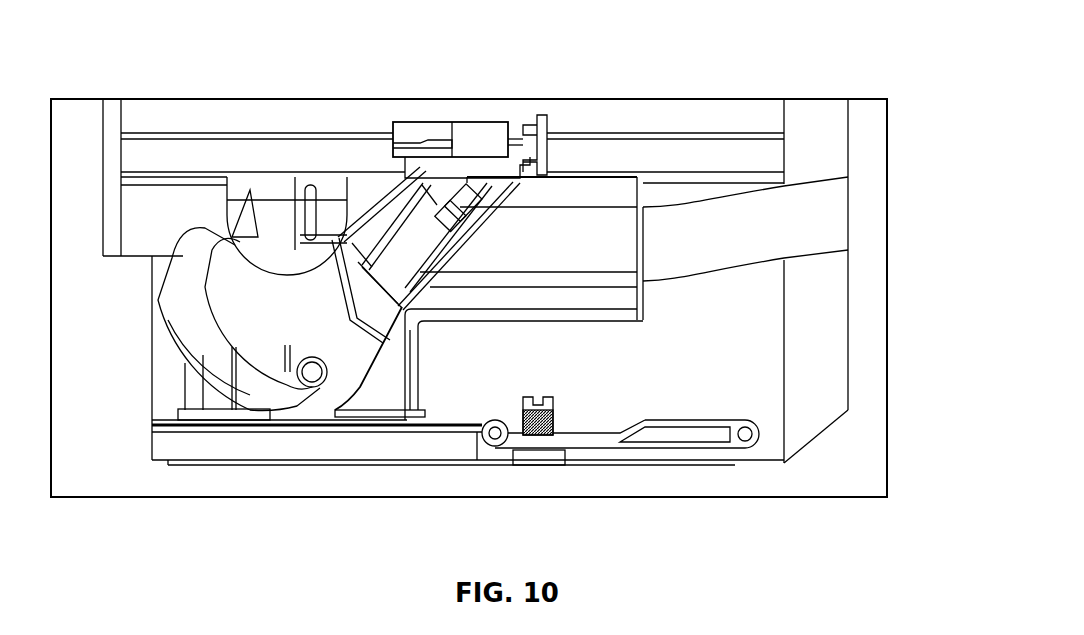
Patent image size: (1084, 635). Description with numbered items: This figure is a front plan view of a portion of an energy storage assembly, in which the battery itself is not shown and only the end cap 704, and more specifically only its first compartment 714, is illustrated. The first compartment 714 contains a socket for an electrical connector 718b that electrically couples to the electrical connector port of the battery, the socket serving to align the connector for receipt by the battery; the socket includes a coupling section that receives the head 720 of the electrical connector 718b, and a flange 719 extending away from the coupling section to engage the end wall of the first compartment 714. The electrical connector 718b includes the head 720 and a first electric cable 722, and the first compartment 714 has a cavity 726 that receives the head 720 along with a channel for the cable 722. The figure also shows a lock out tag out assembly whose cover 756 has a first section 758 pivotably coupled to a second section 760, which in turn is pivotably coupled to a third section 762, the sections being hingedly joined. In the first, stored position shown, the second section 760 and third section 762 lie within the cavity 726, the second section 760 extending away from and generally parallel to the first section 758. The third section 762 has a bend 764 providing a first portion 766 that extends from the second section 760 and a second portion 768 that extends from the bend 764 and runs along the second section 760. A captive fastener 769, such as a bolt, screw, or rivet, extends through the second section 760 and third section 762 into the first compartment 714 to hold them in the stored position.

The end cap 704 is at (838, 58).
The first compartment 714 is at (678, 48).
The electrical connector 718b is at (477, 90).
The base block 719 is at (321, 415).
The head 720 is at (283, 222).
The first electric cable 722 is at (815, 220).
The cavity 726 is at (727, 296).
The cover 756 is at (487, 418).
The first section 758 is at (434, 422).
The second section 760 is at (664, 447).
The third section 762 is at (688, 420).
The bend 764 is at (635, 428).
The first portion 766 is at (675, 418).
The second portion 768 is at (577, 433).
The captive fastener 769 is at (547, 440).